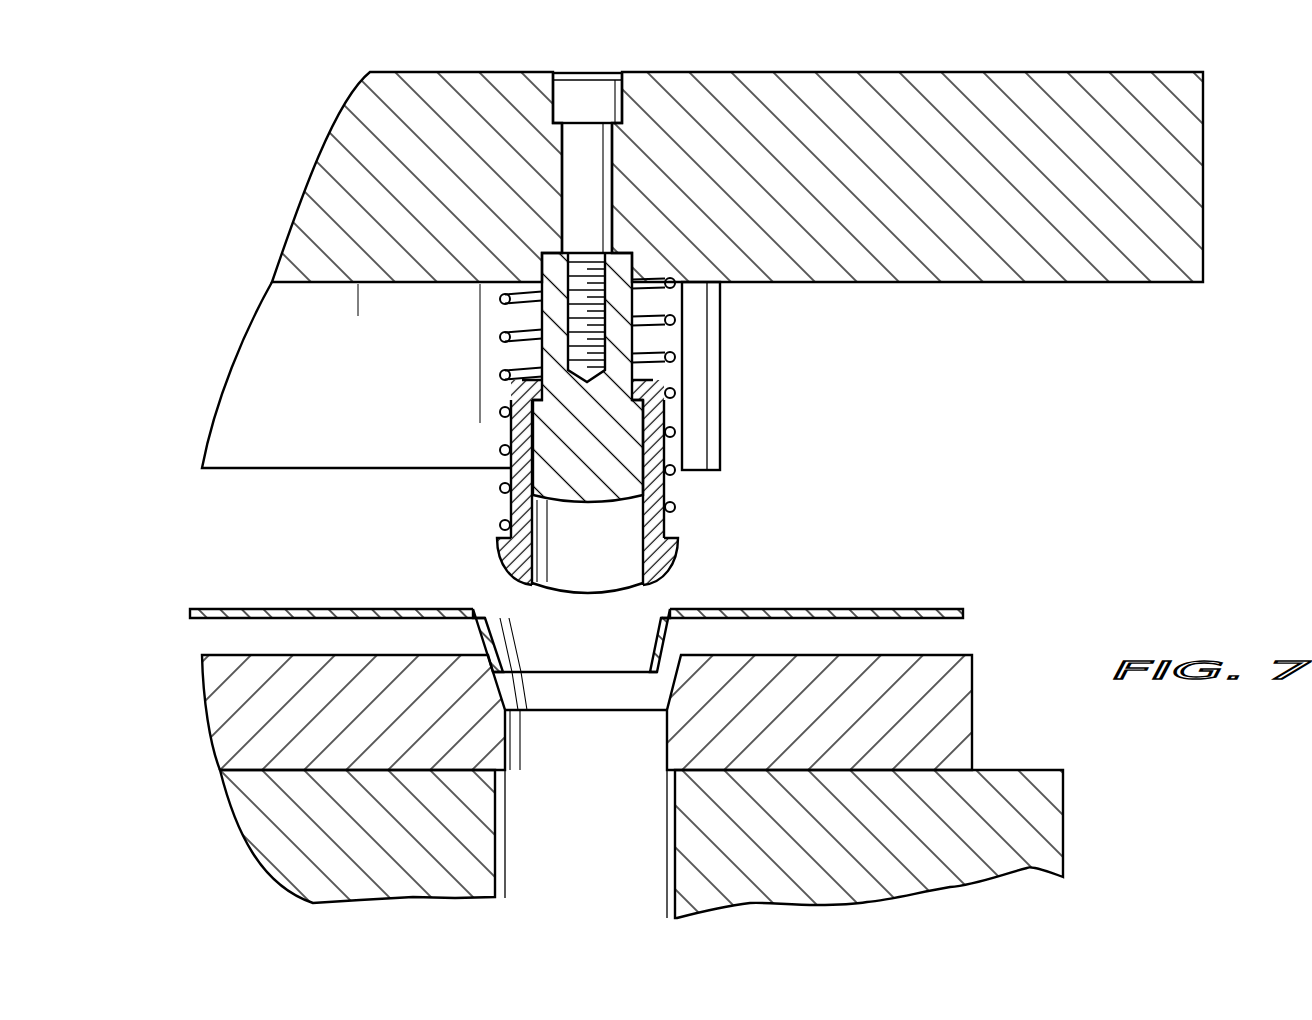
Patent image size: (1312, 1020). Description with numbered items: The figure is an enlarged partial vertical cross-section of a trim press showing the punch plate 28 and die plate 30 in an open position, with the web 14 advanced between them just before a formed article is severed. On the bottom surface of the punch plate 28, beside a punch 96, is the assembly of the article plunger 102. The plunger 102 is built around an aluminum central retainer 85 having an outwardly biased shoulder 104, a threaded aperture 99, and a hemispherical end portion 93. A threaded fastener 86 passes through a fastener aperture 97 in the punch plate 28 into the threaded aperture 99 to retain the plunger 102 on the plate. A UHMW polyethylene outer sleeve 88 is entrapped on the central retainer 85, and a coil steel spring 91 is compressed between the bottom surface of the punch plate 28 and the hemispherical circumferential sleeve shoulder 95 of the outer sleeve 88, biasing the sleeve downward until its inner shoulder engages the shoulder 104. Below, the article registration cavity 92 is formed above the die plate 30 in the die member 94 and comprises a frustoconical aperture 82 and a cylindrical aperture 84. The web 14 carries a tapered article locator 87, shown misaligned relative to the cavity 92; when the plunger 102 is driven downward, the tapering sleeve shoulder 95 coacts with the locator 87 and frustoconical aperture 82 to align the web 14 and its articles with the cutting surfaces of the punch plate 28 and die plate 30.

The web 14 is at (868, 609).
The punch plate 28 is at (1203, 182).
The die plate 30 is at (1063, 835).
The frustoconical aperture 82 is at (670, 687).
The cylindrical aperture 84 is at (663, 736).
The central retainer 85 is at (597, 480).
The threaded fastener 86 is at (590, 97).
The tapered article locator 87 is at (483, 641).
The outer sleeve 88 is at (667, 584).
The coil steel spring 91 is at (676, 355).
The article registration cavity 92 is at (678, 650).
The hemispherical end portion 93 is at (611, 593).
The die member 94 is at (972, 718).
The hemispherical circumferential sleeve shoulder 95 is at (673, 546).
The punch 96 is at (722, 402).
The fastener aperture 97 is at (577, 72).
The threaded aperture 99 is at (570, 288).
The article plunger 102 is at (254, 387).
The outwardly biased shoulder 104 is at (523, 397).